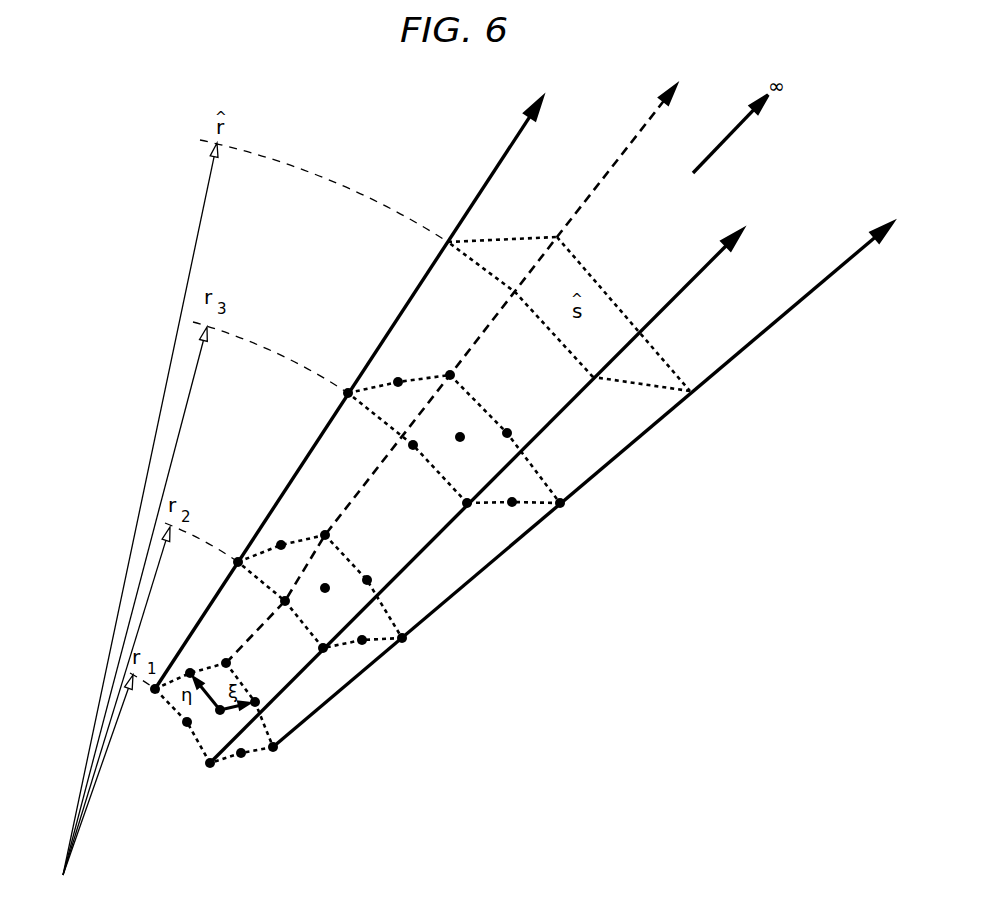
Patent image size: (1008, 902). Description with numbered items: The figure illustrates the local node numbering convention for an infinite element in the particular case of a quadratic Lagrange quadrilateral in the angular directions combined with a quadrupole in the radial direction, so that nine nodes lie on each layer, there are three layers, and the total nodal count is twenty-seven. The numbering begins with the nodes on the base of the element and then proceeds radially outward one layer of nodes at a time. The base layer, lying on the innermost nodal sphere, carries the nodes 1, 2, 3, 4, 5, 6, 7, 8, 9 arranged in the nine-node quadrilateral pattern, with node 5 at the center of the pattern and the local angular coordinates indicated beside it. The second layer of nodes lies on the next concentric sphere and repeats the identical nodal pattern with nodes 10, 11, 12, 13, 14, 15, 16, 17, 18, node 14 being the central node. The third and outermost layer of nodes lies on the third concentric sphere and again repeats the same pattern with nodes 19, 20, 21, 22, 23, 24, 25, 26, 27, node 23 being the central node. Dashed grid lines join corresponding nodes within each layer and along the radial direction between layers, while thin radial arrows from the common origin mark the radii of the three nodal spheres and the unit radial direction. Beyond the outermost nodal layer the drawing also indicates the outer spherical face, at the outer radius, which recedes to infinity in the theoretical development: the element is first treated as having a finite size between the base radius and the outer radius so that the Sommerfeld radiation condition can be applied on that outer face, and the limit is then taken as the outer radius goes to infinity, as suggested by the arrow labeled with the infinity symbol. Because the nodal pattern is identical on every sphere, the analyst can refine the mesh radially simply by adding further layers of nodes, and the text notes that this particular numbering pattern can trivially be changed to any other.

The node 1 is at (210, 778).
The node 2 is at (241, 767).
The node 3 is at (273, 761).
The node 4 is at (180, 730).
The node 5 is at (218, 723).
The node 6 is at (260, 691).
The node 7 is at (151, 699).
The node 8 is at (195, 663).
The node 9 is at (234, 665).
The node 10 is at (323, 665).
The node 11 is at (356, 654).
The node 12 is at (403, 654).
The node 13 is at (282, 615).
The node 14 is at (334, 601).
The node 15 is at (375, 567).
The node 16 is at (225, 568).
The node 17 is at (285, 532).
The node 18 is at (323, 523).
The node 19 is at (468, 518).
The node 20 is at (513, 516).
The node 21 is at (560, 518).
The node 22 is at (407, 460).
The node 23 is at (463, 450).
The node 24 is at (513, 421).
The node 25 is at (353, 408).
The node 26 is at (397, 368).
The node 27 is at (463, 373).